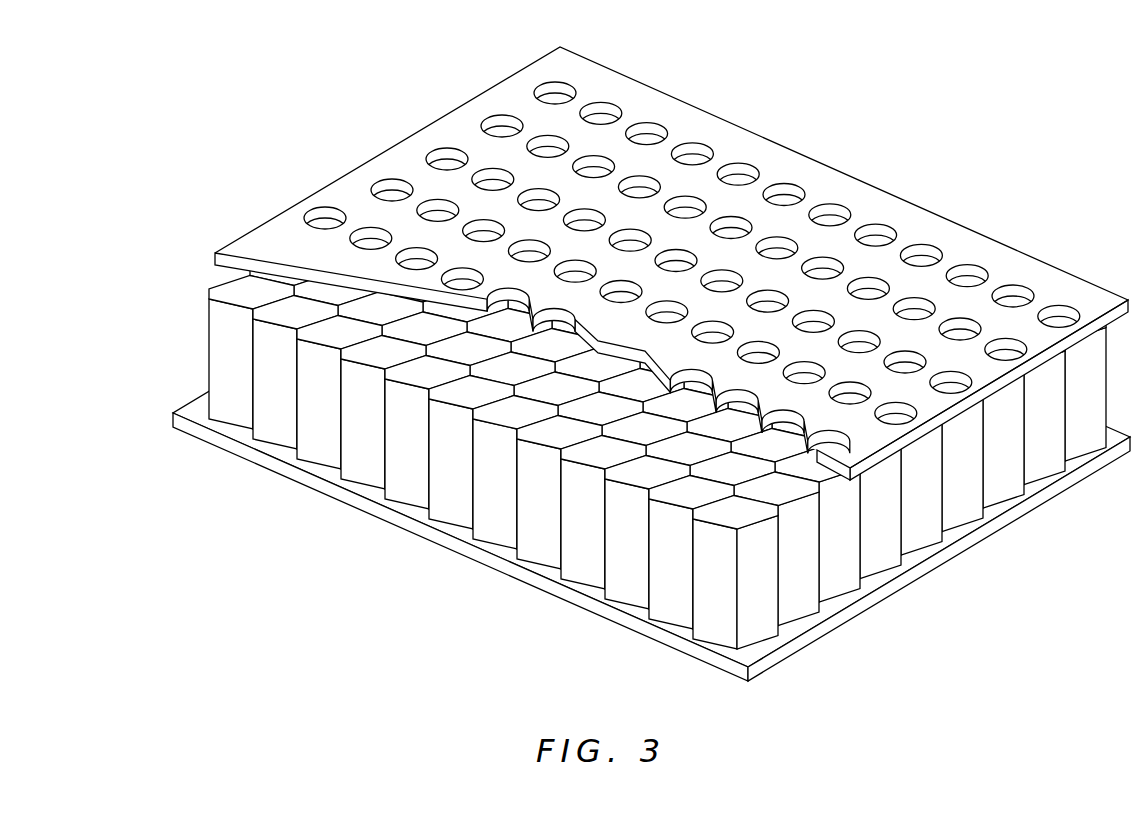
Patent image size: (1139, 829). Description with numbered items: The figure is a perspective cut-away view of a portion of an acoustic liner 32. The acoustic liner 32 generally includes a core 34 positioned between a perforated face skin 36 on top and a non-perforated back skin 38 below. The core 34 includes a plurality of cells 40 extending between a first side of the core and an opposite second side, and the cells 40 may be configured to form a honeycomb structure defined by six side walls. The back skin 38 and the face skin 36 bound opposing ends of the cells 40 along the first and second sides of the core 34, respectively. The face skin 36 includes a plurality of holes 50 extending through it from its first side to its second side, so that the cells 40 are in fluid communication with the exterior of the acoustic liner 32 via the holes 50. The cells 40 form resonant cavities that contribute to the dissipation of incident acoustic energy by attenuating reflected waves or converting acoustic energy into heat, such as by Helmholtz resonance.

The acoustic liner 32 is at (651, 358).
The core 34 is at (657, 388).
The perforated face skin 36 is at (671, 254).
The non-perforated back skin 38 is at (1013, 515).
The cells 40 is at (532, 502).
The holes 50 is at (690, 178).